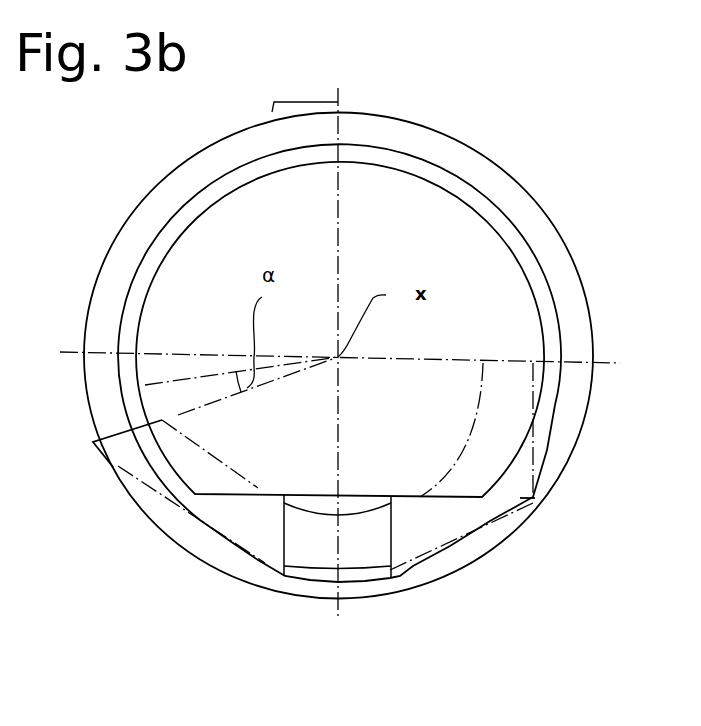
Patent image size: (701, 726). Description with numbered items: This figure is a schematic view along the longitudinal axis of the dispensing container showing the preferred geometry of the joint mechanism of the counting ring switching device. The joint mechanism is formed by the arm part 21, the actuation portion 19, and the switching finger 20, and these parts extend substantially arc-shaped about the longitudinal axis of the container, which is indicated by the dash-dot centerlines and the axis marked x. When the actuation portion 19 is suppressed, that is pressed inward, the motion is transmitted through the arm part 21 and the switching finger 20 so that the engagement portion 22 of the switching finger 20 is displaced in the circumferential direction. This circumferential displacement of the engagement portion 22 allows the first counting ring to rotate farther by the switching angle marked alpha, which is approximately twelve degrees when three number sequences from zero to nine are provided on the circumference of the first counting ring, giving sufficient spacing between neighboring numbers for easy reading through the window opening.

The actuation portion 19 is at (370, 553).
The switching finger 20 is at (228, 510).
The arm part 21 is at (530, 498).
The engagement portion 22 is at (135, 465).